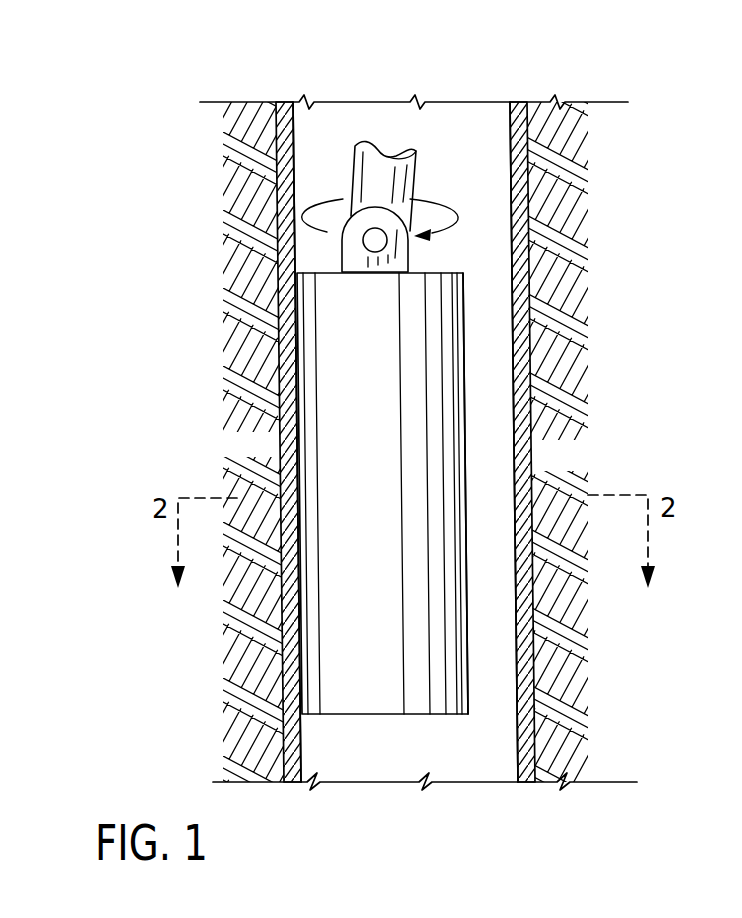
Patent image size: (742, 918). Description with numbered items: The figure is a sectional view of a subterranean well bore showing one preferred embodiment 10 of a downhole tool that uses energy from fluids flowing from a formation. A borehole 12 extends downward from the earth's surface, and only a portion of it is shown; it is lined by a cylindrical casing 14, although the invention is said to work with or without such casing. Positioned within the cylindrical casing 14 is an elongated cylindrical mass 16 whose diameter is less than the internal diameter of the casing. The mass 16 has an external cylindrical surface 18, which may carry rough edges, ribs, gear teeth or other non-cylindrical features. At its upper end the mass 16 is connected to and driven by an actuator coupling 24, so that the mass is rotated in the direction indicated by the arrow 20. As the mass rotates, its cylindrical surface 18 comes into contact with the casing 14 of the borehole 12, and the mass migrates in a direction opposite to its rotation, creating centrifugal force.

The preferred embodiment 10 is at (206, 317).
The borehole 12 is at (523, 334).
The cylindrical casing 14 is at (295, 147).
The elongated cylindrical mass 16 is at (360, 610).
The external cylindrical surface 18 is at (467, 575).
The arrow 20 is at (453, 201).
The actuator coupling 24 is at (362, 203).